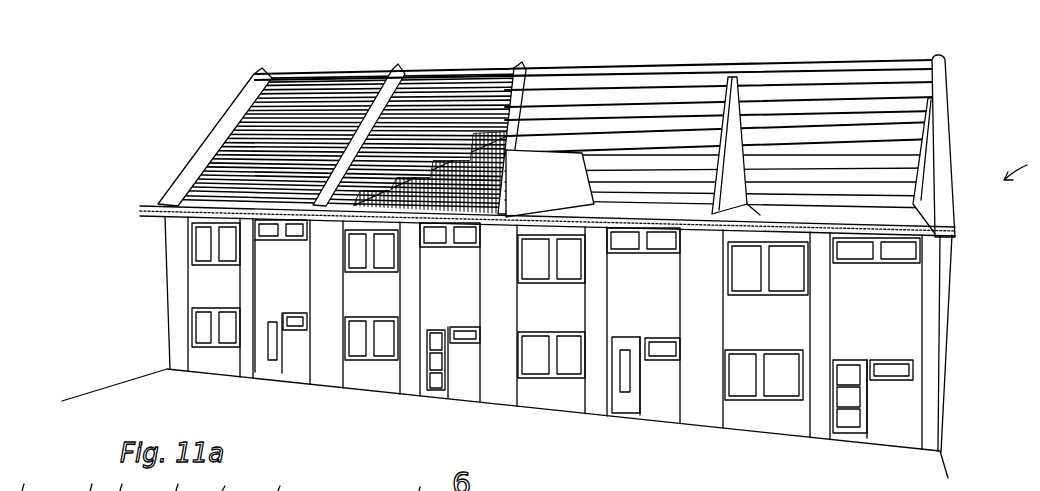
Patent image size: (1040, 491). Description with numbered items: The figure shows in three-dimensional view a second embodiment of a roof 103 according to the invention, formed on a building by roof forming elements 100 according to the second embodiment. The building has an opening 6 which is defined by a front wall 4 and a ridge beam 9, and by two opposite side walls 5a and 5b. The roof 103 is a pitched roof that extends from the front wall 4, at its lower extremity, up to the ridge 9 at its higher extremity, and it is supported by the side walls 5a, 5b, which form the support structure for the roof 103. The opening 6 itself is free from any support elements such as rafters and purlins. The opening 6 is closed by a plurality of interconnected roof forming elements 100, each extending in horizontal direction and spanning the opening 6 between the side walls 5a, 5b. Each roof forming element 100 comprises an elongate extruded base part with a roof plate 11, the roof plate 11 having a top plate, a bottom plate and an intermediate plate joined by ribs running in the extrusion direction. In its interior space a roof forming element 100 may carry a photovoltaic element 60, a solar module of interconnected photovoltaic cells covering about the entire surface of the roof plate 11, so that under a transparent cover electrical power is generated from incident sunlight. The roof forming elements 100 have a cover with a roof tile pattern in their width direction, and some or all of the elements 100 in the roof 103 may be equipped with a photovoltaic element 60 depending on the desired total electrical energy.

The front wall 4 is at (655, 312).
The side wall 5a is at (736, 201).
The side wall 5b is at (943, 170).
The opening 6 is at (557, 136).
The ridge beam 9 is at (768, 62).
The roof plate 11 is at (648, 112).
The photovoltaic element 60 is at (518, 72).
The roof forming element 100 is at (213, 158).
The roof 103 is at (918, 50).